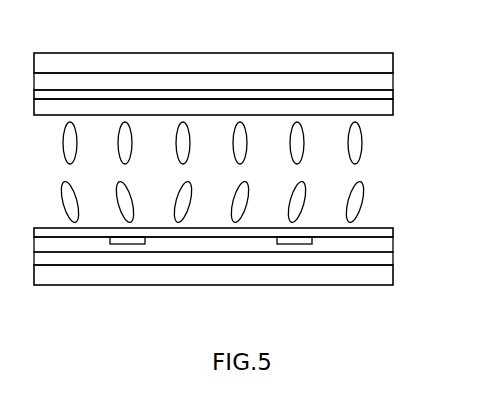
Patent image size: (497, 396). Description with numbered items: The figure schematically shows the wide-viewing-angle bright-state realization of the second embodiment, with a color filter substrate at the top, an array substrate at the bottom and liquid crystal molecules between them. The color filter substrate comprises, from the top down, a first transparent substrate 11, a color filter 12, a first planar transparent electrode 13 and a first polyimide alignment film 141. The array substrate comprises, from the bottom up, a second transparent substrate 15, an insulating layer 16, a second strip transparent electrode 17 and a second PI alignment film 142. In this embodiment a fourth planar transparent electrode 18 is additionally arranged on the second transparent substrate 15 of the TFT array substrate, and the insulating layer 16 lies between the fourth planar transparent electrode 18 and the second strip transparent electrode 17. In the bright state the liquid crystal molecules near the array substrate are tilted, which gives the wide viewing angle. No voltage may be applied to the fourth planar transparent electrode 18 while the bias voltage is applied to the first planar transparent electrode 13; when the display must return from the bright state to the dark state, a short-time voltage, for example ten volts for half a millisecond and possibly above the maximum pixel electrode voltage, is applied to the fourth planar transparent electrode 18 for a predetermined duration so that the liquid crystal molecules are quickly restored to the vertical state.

The first transparent substrate 11 is at (197, 63).
The color filter 12 is at (263, 83).
The first planar transparent electrode 13 is at (310, 97).
The first polyimide alignment film 141 is at (378, 107).
The second PI alignment film 142 is at (373, 231).
The second transparent substrate 15 is at (55, 277).
The insulating layer 16 is at (187, 245).
The second strip transparent electrode 17 is at (307, 243).
The fourth planar transparent electrode 18 is at (108, 260).